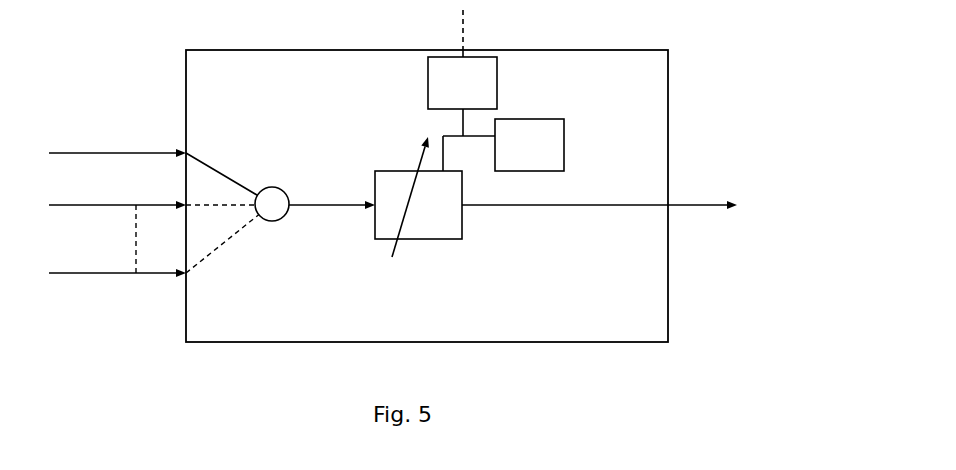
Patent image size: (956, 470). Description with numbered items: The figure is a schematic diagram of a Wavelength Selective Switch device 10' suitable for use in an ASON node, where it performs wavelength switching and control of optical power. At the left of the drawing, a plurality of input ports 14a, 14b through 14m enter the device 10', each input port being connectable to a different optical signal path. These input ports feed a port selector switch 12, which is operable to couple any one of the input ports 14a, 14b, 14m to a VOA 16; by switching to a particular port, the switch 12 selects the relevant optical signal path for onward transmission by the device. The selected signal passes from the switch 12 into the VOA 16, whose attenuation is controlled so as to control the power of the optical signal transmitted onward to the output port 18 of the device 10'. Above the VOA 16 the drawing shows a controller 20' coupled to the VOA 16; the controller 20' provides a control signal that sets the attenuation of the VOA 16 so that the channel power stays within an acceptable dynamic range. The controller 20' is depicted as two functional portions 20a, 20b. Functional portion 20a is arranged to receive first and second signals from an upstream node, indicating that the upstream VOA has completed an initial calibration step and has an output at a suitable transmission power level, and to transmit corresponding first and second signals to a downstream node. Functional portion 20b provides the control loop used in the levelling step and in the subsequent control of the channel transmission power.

The device 10' is at (475, 241).
The input port 14a is at (117, 143).
The input port 14b is at (117, 194).
The input port 14m is at (117, 256).
The port selector switch 12 is at (283, 218).
The VOA 16 is at (461, 256).
The output port 18 is at (723, 186).
The controller 20' is at (500, 90).
The functional portion 20a is at (443, 91).
The functional portion 20b is at (511, 152).